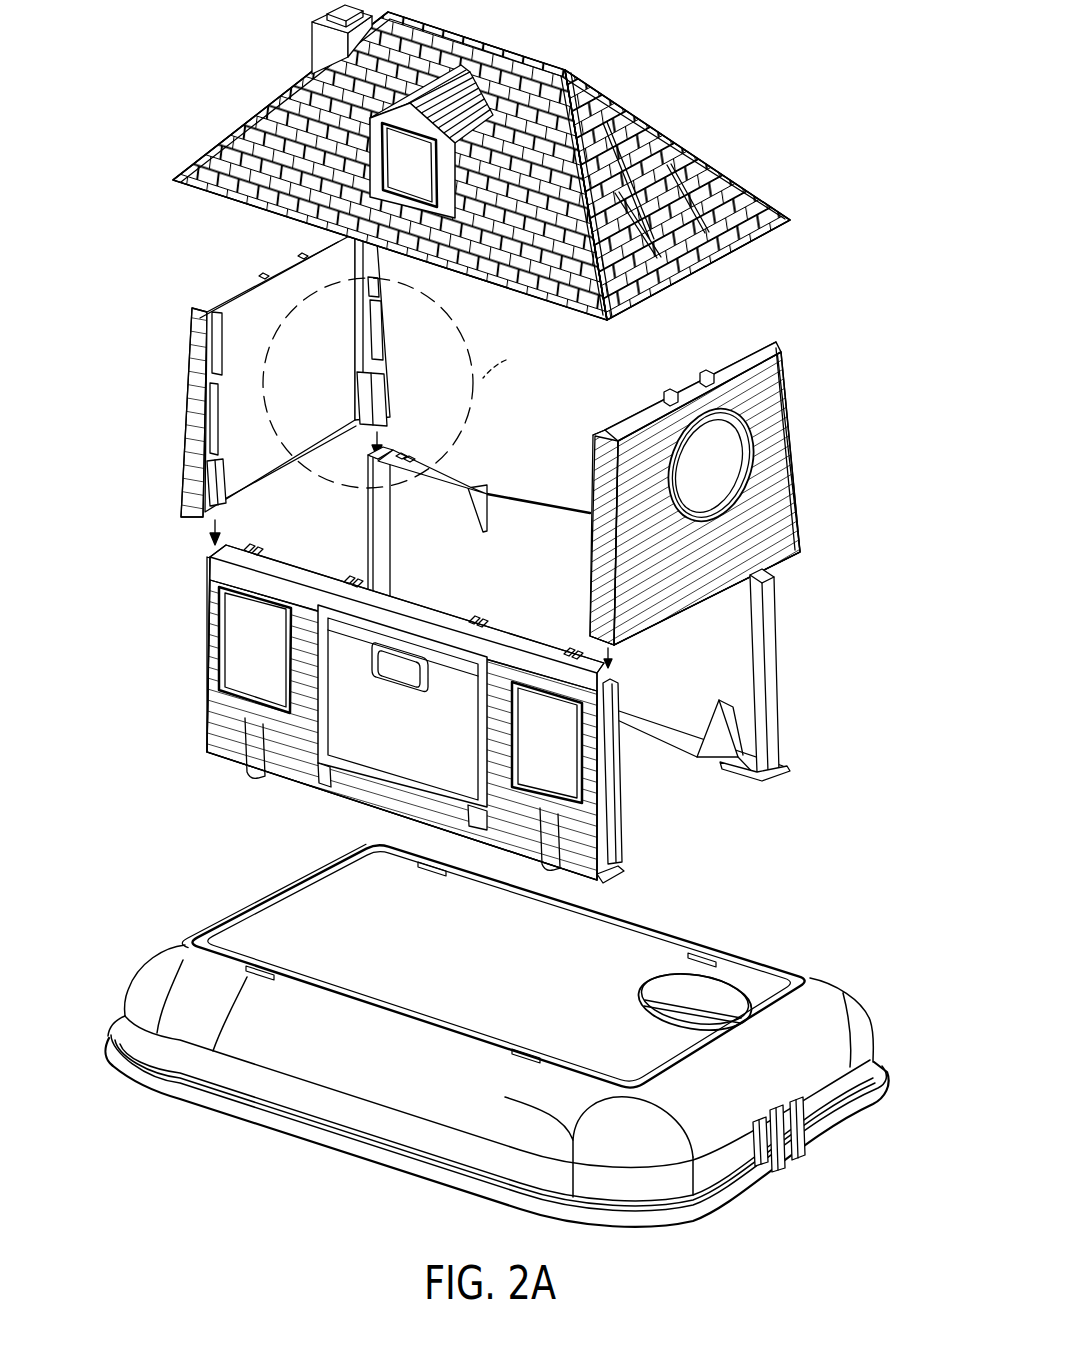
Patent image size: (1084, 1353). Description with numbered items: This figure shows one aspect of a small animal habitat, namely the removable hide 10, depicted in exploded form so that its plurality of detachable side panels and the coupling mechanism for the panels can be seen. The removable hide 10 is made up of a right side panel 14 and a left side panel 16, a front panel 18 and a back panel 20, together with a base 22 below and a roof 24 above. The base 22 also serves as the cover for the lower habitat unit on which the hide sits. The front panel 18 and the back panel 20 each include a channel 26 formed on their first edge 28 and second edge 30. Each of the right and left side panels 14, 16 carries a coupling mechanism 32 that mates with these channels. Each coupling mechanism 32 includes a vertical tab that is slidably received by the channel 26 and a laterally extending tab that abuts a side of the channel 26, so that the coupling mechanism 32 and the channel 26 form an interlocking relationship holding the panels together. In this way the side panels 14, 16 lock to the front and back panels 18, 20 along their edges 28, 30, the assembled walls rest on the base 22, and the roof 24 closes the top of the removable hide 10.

The removable hide 10 is at (497, 617).
The right side panel 14 is at (780, 496).
The left side panel 16 is at (192, 346).
The front panel 18 is at (587, 833).
The back panel 20 is at (517, 515).
The base 22 is at (418, 1135).
The roof 24 is at (660, 151).
The channel 26 is at (782, 773).
The first edge 28 is at (777, 642).
The second edge 30 is at (366, 516).
The coupling mechanism 32 is at (380, 412).